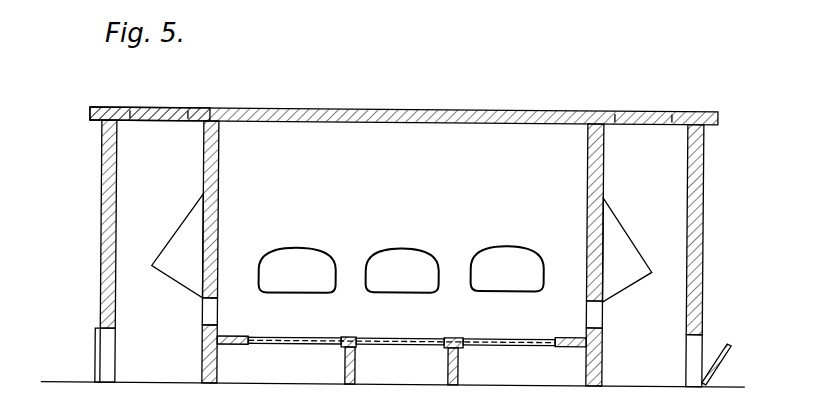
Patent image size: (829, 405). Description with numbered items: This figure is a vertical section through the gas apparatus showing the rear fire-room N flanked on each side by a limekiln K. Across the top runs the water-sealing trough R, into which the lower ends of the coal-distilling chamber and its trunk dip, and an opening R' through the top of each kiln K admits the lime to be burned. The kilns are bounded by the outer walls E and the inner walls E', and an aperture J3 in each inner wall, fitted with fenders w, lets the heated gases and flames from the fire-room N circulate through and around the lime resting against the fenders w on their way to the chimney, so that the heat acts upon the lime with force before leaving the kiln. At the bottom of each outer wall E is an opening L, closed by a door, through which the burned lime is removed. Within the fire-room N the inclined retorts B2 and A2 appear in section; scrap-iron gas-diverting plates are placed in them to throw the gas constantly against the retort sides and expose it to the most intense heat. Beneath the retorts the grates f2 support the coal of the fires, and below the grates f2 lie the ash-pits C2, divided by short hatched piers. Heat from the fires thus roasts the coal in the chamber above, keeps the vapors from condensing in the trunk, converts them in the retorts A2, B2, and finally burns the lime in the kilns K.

The water-sealing trough R is at (404, 106).
The opening through top of kiln R' is at (150, 104).
The valve E is at (398, 227).
The inner wall E' is at (403, 253).
The kiln K is at (401, 253).
The fire-room N is at (402, 230).
The fenders w is at (401, 247).
The aperture in wall J3 is at (402, 313).
The opening for removing lime L is at (413, 357).
The grates f2 is at (401, 336).
The ash-pit C2 is at (401, 365).
The inclined retort B2 is at (401, 269).
The inclined retort A2 is at (402, 270).